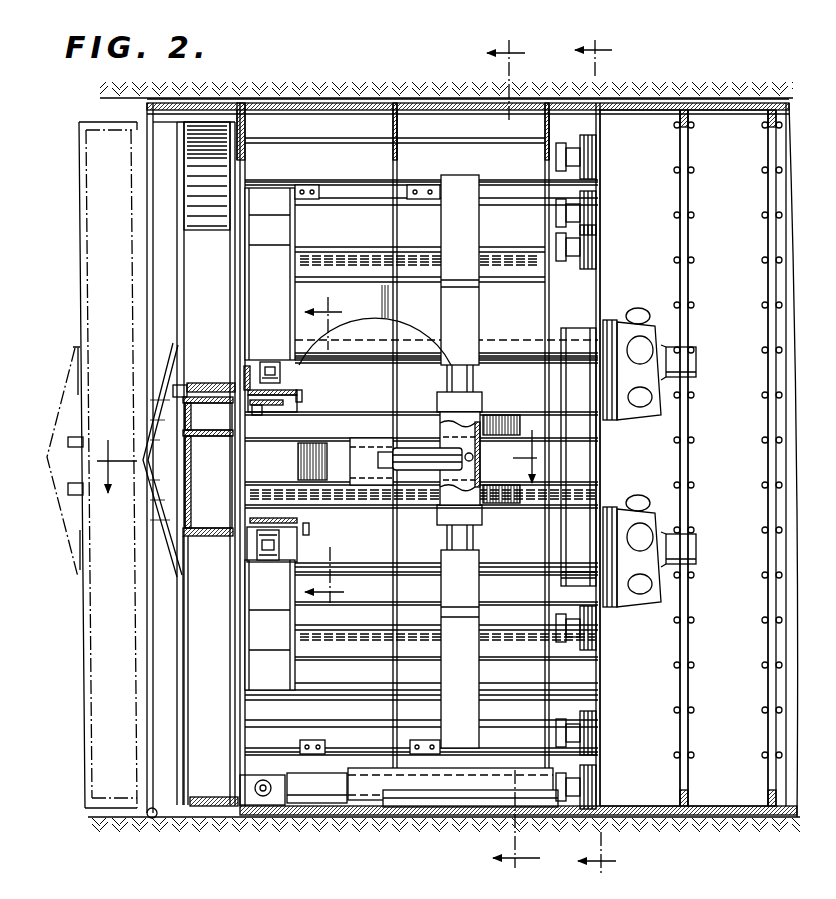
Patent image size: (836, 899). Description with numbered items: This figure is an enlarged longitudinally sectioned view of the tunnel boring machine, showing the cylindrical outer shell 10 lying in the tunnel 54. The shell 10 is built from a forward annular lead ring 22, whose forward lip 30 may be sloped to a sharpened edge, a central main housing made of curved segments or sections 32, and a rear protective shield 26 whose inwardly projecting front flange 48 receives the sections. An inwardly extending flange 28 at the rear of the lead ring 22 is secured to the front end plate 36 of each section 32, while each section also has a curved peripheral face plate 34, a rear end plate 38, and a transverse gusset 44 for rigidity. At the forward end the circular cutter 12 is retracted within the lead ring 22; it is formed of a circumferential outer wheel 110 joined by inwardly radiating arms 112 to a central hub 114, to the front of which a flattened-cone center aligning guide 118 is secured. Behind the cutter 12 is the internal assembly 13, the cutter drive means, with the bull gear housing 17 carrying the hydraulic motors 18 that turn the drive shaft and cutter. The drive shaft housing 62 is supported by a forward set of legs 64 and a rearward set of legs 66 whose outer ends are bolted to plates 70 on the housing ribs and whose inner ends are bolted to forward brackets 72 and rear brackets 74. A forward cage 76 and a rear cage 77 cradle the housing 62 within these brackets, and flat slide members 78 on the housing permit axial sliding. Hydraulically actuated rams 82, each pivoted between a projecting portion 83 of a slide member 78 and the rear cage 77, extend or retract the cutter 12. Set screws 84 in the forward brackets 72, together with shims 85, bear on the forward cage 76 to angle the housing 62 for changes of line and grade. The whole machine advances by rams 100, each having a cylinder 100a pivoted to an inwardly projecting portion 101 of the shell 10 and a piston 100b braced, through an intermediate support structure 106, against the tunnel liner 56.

The cylindrical outer shell 10 is at (342, 98).
The circular cutter 12 is at (172, 197).
The internal assembly 13 is at (395, 378).
The bull gear housing 17 is at (590, 456).
The motors 18 is at (640, 312).
The forward annular lead ring 22 is at (178, 103).
The rear protective shield 26 is at (688, 103).
The inwardly extending flange 28 is at (234, 117).
The forward lip 30 is at (143, 106).
The curved segments or sections 32 is at (420, 103).
The curved peripheral face plate 34 is at (475, 110).
The front end plate 36 is at (247, 123).
The rear end plate 38 is at (543, 107).
The transverse gusset 44 is at (398, 128).
The front flange 48 is at (556, 142).
The tunnel 54 is at (760, 92).
The tunnel liner 56 is at (636, 110).
The drive shaft housing 62 is at (340, 422).
The forward set of legs 64 is at (278, 246).
The rearward set of legs 66 is at (471, 250).
The plates 70 is at (305, 185).
The forward brackets 72 is at (246, 372).
The rear brackets 74 is at (482, 372).
The forward cage 76 is at (263, 402).
The rear cage 77 is at (483, 432).
The slide members 78 is at (287, 461).
The hydraulically actuated rams 82 is at (415, 452).
The projecting portion 83 is at (372, 448).
The set screws 84 is at (272, 362).
The shims 85 is at (300, 398).
The rams 100 is at (330, 770).
The cylinder 100a is at (305, 800).
The piston 100b is at (588, 232).
The inwardly projecting portion 101 is at (262, 806).
The intermediate support structure 106 is at (590, 262).
The circumferential outer wheel 110 is at (205, 798).
The inwardly radiating arms 112 is at (200, 702).
The central hub 114 is at (203, 535).
The center aligning member or guide 118 is at (160, 522).